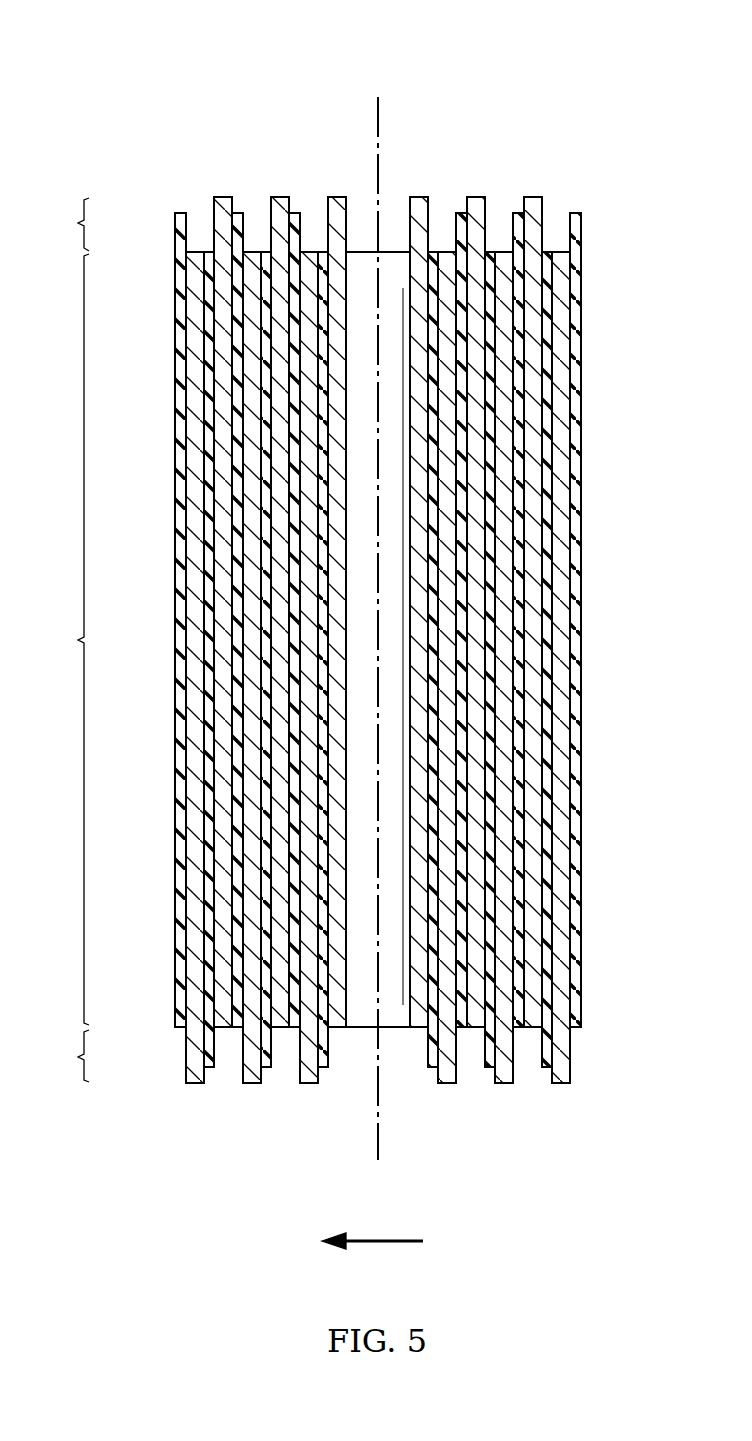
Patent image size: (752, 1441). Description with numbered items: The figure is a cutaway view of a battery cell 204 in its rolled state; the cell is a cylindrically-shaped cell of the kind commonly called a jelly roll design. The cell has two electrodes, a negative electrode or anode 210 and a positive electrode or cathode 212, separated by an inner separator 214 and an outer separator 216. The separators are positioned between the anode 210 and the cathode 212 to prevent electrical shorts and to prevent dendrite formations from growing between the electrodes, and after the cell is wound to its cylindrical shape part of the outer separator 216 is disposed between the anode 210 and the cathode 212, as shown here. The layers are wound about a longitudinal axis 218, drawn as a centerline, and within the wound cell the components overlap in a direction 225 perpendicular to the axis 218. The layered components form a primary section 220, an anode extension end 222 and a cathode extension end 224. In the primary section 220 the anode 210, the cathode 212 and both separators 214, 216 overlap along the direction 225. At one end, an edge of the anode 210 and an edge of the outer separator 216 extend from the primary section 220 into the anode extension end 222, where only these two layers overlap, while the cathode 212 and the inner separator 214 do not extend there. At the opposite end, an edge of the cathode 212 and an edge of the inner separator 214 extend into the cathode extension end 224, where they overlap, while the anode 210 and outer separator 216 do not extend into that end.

The battery cell 204 is at (481, 73).
The anode 210 is at (217, 212).
The cathode 212 is at (195, 1055).
The inner separator 214 is at (213, 1062).
The outer separator 216 is at (240, 215).
The longitudinal axis 218 is at (380, 1163).
The primary section 220 is at (57, 639).
The anode extension end 222 is at (58, 224).
The cathode extension end 224 is at (57, 1056).
The direction 225 is at (383, 1244).